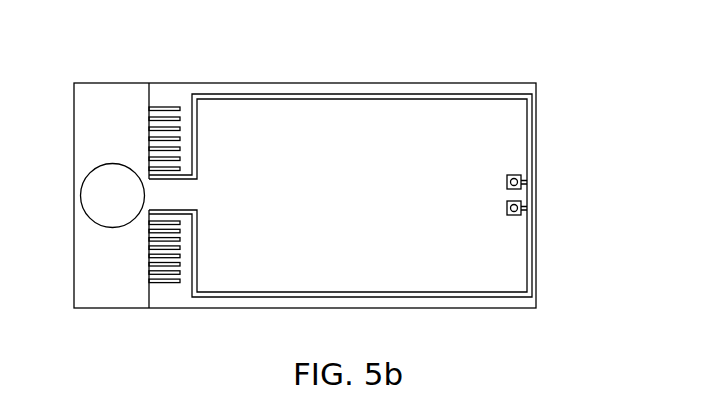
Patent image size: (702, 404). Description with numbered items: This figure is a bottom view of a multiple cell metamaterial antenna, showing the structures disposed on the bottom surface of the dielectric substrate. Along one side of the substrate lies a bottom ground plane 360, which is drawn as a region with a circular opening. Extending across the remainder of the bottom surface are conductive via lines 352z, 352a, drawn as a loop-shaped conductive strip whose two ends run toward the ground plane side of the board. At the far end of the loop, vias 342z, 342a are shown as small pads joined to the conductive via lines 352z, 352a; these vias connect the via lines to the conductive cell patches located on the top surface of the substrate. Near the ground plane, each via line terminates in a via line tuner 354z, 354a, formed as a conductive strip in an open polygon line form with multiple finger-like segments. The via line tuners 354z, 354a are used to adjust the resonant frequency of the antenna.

The bottom ground plane 360 is at (113, 130).
The via line tuner 354z is at (163, 142).
The via line tuner 354a is at (165, 248).
The conductive via line 352z is at (423, 98).
The conductive via line 352a is at (425, 295).
The via 342z is at (523, 182).
The via 342a is at (523, 208).